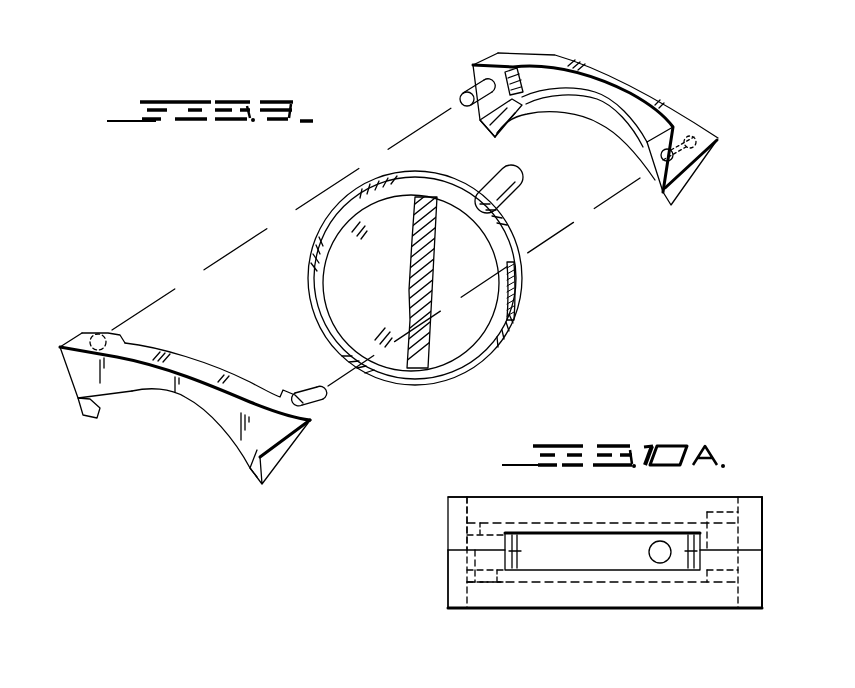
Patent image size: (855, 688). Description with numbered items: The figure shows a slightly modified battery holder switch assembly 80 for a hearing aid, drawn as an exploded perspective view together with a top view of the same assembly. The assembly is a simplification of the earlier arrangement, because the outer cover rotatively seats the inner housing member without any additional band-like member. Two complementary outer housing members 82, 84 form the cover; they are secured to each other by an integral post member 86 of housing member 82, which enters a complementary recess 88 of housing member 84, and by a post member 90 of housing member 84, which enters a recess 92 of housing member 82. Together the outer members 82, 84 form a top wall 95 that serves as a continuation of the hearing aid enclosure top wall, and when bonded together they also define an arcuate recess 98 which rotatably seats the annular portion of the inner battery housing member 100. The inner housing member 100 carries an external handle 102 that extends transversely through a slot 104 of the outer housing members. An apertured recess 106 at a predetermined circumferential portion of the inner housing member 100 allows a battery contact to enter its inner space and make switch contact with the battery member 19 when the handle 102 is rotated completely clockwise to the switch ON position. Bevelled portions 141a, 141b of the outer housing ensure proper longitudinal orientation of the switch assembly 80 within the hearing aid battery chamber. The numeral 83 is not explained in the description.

In FIG. 9, the battery member 19 is at (381, 300).
In FIG. 9, the battery holder switch assembly 80 is at (650, 305).
In FIG. 9, the outer housing member 82 is at (653, 44).
In FIG. 10A, the outer housing member 82 is at (703, 503).
In FIG. 10A, the base portion 83 is at (689, 603).
In FIG. 9, the outer housing member 84 is at (180, 418).
In FIG. 9, the post member 86 is at (461, 90).
In FIG. 10A, the post member 86 is at (469, 585).
In FIG. 9, the recess 88 is at (127, 329).
In FIG. 9, the post member 90 is at (322, 399).
In FIG. 10A, the post member 90 is at (719, 518).
In FIG. 9, the recess 92 is at (663, 160).
In FIG. 10A, the recess 92 is at (757, 546).
In FIG. 9, the top wall 95 is at (498, 62).
In FIG. 10A, the top wall 95 is at (595, 506).
In FIG. 9, the arcuate recess 98 is at (506, 106).
In FIG. 10A, the arcuate recess 98 is at (471, 528).
In FIG. 9, the inner battery housing member 100 is at (305, 297).
In FIG. 10A, the inner battery housing member 100 is at (490, 617).
In FIG. 9, the external handle 102 is at (522, 190).
In FIG. 10A, the external handle 102 is at (654, 562).
In FIG. 10A, the slot 104 is at (559, 558).
In FIG. 9, the apertured recess 106 is at (516, 296).
In FIG. 9, the bevelled portion 141a is at (473, 65).
In FIG. 9, the bevelled portion 141b is at (718, 139).